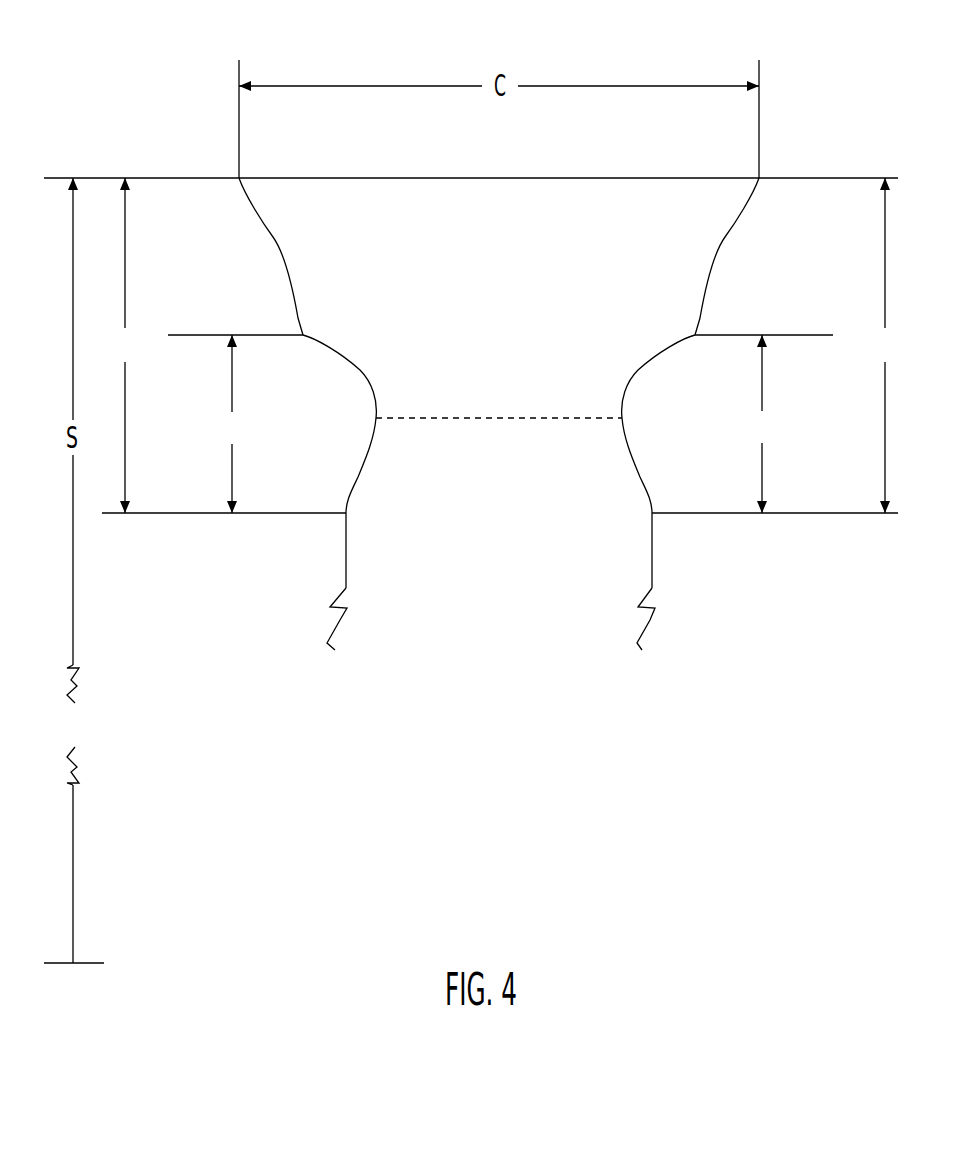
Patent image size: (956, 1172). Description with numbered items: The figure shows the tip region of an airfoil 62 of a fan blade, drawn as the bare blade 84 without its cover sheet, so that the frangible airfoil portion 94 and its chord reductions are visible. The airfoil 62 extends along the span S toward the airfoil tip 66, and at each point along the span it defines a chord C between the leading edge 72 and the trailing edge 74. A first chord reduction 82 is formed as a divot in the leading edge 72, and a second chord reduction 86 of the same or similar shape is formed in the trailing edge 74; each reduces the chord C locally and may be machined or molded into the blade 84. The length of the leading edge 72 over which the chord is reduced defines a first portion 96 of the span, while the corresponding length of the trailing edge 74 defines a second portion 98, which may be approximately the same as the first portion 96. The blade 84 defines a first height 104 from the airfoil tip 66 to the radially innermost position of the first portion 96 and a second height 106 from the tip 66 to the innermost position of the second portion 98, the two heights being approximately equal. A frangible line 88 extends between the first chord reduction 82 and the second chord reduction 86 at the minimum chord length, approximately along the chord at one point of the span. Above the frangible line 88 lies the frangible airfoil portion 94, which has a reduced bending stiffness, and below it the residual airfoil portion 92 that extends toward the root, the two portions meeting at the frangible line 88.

The airfoil 62 is at (128, 128).
The airfoil tip 66 is at (595, 178).
The frangible airfoil portion 94 is at (697, 256).
The first chord reduction 82 is at (366, 418).
The second chord reduction 86 is at (634, 420).
The frangible line 88 is at (462, 420).
The leading edge 72 is at (360, 532).
The trailing edge 74 is at (655, 538).
The residual airfoil portion 92 is at (365, 570).
The blade 84 is at (640, 574).
The first height 104 is at (124, 345).
The second height 106 is at (884, 345).
The first portion of the span 96 is at (232, 424).
The second portion of the span 98 is at (762, 424).